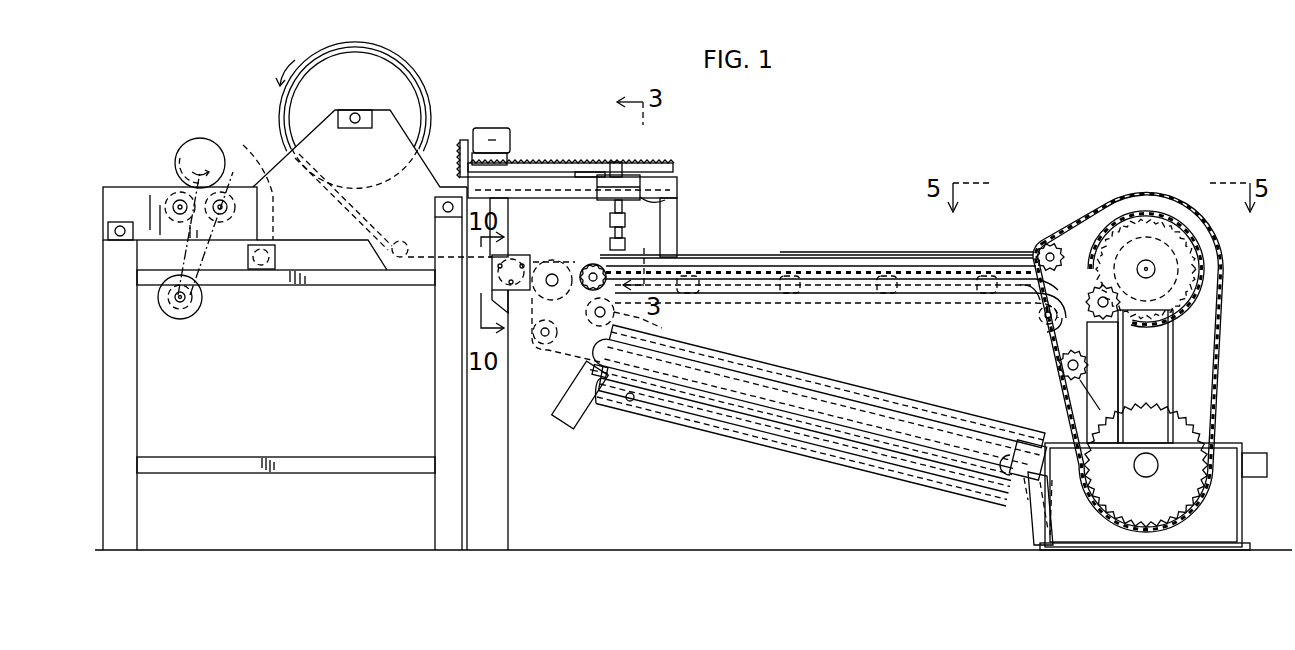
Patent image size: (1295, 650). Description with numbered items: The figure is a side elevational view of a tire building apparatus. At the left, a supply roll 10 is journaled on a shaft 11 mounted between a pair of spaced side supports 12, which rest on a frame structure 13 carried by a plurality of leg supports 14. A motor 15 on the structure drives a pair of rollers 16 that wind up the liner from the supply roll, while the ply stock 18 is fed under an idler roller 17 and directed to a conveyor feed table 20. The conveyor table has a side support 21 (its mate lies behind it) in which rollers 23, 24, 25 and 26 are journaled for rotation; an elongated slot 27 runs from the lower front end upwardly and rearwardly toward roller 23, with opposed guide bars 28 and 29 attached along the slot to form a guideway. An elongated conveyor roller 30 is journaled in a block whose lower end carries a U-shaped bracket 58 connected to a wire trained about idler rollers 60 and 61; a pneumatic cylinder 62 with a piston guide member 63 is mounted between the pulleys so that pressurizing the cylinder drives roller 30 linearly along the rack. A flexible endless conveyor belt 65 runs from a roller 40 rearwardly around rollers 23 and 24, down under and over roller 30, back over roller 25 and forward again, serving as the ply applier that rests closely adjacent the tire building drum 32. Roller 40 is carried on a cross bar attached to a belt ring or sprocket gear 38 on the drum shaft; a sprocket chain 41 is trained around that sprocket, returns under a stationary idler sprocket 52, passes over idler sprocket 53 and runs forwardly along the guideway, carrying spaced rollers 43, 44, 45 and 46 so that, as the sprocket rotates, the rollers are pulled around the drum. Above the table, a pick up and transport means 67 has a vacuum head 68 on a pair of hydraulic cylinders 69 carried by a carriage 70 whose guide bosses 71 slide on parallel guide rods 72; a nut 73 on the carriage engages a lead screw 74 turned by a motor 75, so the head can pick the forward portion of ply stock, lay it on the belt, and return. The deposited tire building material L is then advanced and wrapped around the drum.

The supply roll 10 is at (389, 52).
The shaft 11 is at (358, 112).
The side supports 12 is at (400, 125).
The frame structure 13 is at (358, 288).
The leg supports 14 is at (133, 437).
The motor 15 is at (196, 316).
The rollers 16 is at (178, 192).
The idler roller 17 is at (402, 241).
The ply stock 18 is at (340, 216).
The conveyor feed table 20 is at (778, 185).
The side support 21 is at (958, 371).
The roller 23 is at (541, 258).
The roller 24 is at (548, 353).
The roller 25 is at (650, 323).
The roller 26 is at (1041, 323).
The elongated slot 27 is at (768, 377).
The guide bar 28 is at (723, 405).
The guide bar 29 is at (838, 390).
The conveyor roller 30 is at (1012, 458).
The tire building drum 32 is at (1167, 215).
The sprocket gear 38 is at (1214, 275).
The roller 40 is at (1118, 316).
The sprocket chain 41 is at (1130, 192).
The roller 43 is at (687, 276).
The roller 44 is at (786, 276).
The roller 45 is at (882, 276).
The roller 46 is at (986, 276).
The idler sprocket 52 is at (1047, 243).
The idler sprocket 53 is at (583, 243).
The U-shaped bracket 58 is at (1028, 492).
The idler roller 60 is at (566, 385).
The idler roller 61 is at (1056, 515).
The pneumatic cylinder 62 is at (807, 450).
The piston guide member 63 is at (632, 402).
The conveyor belt 65 is at (740, 200).
The pick up and transport means 67 is at (668, 136).
The vacuum head 68 is at (610, 220).
The hydraulic cylinders 69 is at (586, 172).
The carriage 70 is at (630, 175).
The guide bosses 71 is at (623, 212).
The guide rods 72 is at (662, 198).
The nut 73 is at (612, 162).
The lead screw 74 is at (535, 163).
The motor 75 is at (495, 128).
The tire building material L is at (832, 252).